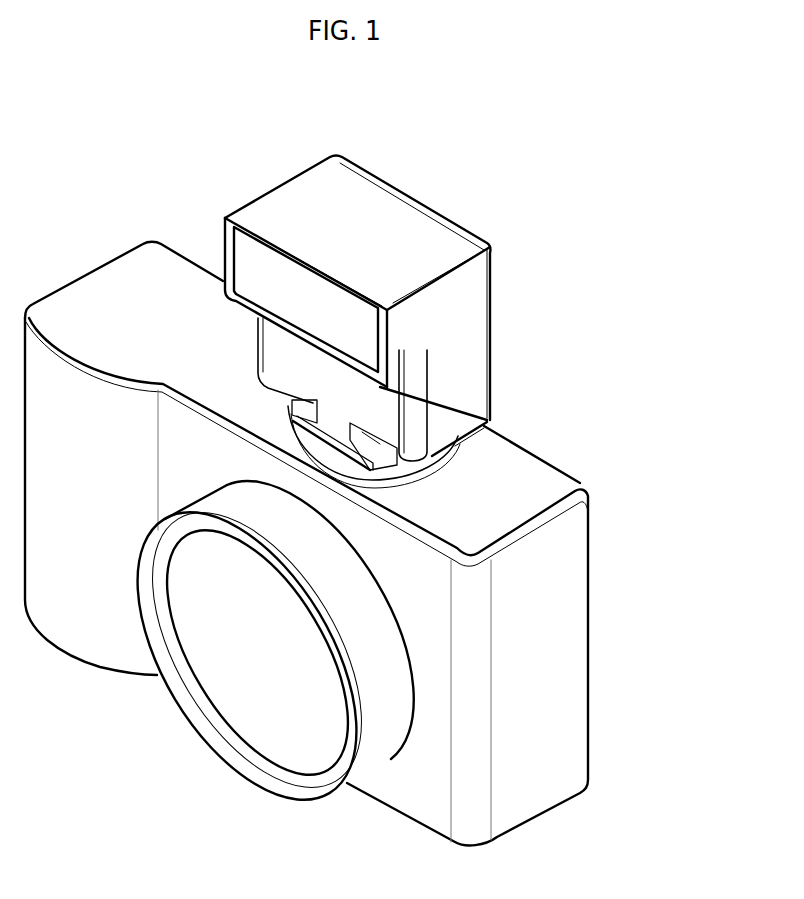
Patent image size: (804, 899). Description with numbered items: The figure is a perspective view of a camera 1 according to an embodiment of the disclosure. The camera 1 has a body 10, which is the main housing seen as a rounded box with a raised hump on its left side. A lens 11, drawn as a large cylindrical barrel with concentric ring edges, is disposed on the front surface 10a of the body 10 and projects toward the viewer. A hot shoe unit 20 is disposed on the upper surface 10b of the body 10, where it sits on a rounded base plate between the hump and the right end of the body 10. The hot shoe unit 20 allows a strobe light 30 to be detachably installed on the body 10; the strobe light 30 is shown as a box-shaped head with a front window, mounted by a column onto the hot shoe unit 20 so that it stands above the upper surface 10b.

The camera 1 is at (103, 135).
The body 10 is at (612, 578).
The front surface 10a is at (392, 787).
The upper surface 10b is at (513, 480).
The lens 11 is at (253, 707).
The hot shoe unit 20 is at (279, 409).
The strobe light 30 is at (509, 313).